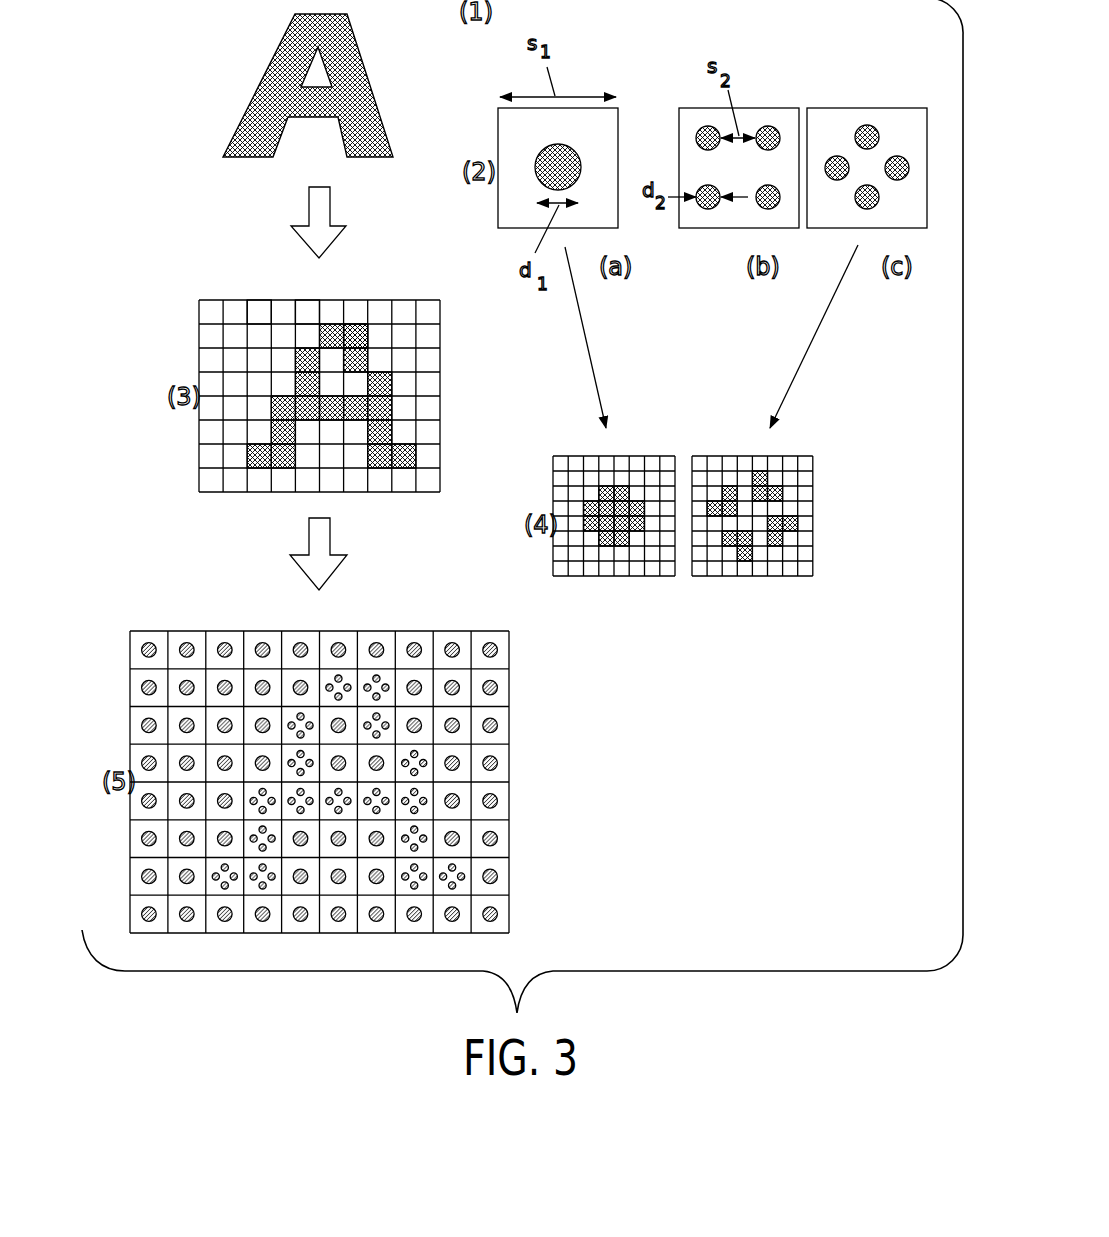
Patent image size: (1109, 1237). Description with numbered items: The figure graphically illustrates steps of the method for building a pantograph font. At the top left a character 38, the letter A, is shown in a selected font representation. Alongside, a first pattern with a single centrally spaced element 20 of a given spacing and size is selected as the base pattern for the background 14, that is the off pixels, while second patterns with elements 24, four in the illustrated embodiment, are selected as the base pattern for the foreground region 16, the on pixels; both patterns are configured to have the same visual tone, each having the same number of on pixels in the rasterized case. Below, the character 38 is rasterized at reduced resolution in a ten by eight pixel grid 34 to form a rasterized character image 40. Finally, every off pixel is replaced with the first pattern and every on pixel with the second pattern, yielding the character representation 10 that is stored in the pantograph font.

The character 38 is at (250, 103).
The rasterized character image 40 is at (172, 313).
The n×m grid 34 is at (262, 315).
The background 14 is at (310, 310).
The foreground region 16 is at (352, 334).
The element 20 is at (537, 163).
The second element 24 is at (730, 488).
The character representation 10 is at (142, 688).